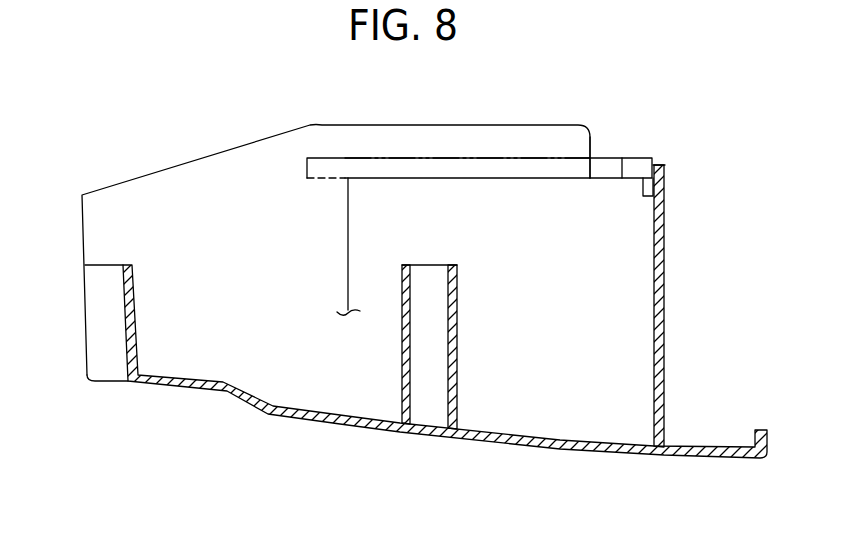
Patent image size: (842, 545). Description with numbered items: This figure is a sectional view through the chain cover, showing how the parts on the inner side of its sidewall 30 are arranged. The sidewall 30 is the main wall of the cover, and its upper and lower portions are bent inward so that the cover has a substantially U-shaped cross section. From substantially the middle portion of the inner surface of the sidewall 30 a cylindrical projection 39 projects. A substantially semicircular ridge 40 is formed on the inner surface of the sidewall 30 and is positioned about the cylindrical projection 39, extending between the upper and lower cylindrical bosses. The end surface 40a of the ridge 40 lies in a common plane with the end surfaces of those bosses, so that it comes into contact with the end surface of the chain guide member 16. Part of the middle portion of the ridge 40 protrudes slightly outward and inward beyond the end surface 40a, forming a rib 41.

The chain guide member 16 is at (403, 158).
The sidewall 30 is at (492, 443).
The cylindrical projection 39 is at (457, 318).
The semicircular ridge 40 is at (635, 267).
The end surface of the ridge 40a is at (518, 180).
The rib 41 is at (665, 167).